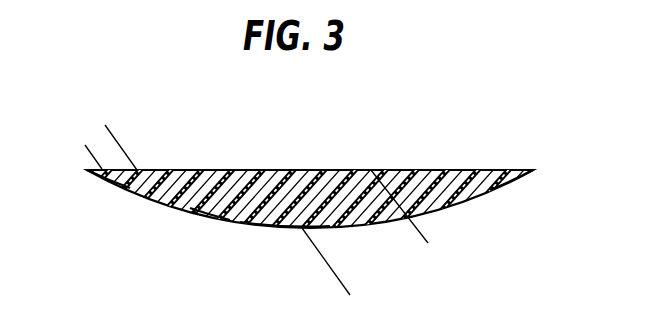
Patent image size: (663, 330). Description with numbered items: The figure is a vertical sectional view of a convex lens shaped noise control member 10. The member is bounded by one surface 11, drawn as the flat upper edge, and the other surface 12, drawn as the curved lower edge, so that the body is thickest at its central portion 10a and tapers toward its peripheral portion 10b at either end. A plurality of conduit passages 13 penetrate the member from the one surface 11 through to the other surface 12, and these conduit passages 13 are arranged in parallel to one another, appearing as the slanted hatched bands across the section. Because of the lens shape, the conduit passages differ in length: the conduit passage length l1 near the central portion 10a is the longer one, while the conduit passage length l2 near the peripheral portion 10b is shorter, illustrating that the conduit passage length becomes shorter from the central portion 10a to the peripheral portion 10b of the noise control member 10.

The noise control member 10 is at (412, 170).
The central portion 10a is at (333, 170).
The peripheral portion 10b is at (120, 186).
The one surface 11 is at (262, 170).
The other surface 12 is at (277, 228).
The conduit passages 13 is at (211, 214).
The conduit passage length l1 is at (423, 235).
The conduit passage length l2 is at (118, 118).